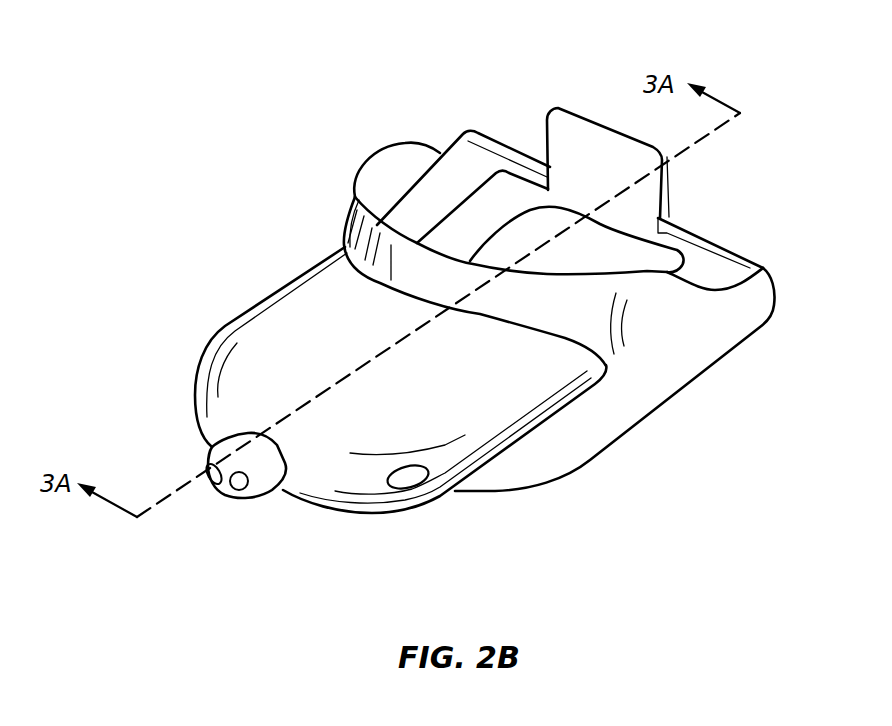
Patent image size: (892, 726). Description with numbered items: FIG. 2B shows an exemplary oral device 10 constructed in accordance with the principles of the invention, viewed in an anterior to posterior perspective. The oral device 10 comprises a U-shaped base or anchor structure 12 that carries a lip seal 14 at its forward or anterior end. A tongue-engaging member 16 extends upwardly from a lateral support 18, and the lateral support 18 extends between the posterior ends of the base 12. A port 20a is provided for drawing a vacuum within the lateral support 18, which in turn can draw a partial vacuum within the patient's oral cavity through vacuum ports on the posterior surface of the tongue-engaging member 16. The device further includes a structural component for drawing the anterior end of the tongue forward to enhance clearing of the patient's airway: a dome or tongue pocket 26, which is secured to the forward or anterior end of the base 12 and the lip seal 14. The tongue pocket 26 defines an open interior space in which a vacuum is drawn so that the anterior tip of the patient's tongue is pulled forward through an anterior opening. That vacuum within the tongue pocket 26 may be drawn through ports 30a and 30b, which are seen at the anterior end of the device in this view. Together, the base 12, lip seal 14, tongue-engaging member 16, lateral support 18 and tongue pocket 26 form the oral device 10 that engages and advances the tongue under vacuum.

The oral device 10 is at (193, 246).
The U-shaped base or anchor structure 12 is at (402, 220).
The lip seal 14 is at (543, 297).
The tongue-engaging member 16 is at (565, 105).
The lateral support 18 is at (707, 231).
The port 20a is at (400, 480).
The dome or tongue pocket 26 is at (237, 355).
The port 30a is at (238, 490).
The port 30b is at (217, 481).